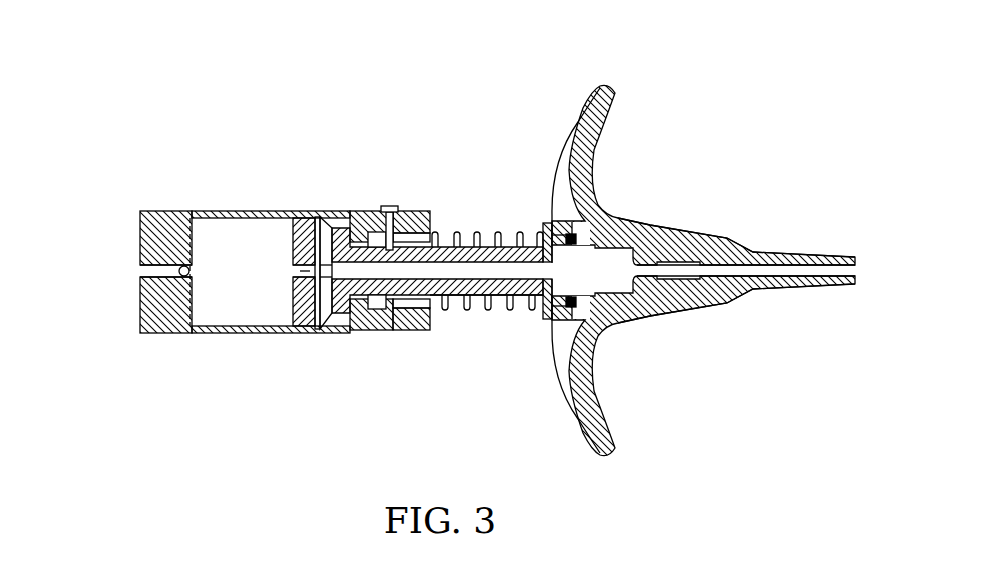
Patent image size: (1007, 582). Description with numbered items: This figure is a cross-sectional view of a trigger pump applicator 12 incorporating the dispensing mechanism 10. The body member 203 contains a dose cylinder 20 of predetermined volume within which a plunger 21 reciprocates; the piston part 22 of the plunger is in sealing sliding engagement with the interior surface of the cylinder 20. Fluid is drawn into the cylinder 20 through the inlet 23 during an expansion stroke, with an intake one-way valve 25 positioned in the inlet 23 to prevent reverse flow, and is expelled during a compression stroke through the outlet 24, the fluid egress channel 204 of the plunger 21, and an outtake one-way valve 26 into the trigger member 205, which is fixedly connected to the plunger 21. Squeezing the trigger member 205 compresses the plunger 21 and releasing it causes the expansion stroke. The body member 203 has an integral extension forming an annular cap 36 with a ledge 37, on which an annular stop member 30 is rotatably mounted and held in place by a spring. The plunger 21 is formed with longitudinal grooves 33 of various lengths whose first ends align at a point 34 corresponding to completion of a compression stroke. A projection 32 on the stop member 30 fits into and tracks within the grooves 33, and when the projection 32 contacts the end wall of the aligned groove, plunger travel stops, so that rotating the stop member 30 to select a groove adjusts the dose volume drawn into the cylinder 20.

The dispensing mechanism 10 is at (368, 145).
The trigger pump applicator 12 is at (557, 66).
The dose cylinder 20 is at (237, 334).
The plunger 21 is at (483, 274).
The piston part 22 is at (308, 329).
The inlet 23 is at (119, 267).
The outlet 24 is at (285, 263).
The intake one-way valve 25 is at (189, 272).
The outtake one-way valve 26 is at (569, 234).
The stop member 30 is at (418, 207).
The projection 32 is at (388, 206).
The longitudinal grooves 33 is at (462, 233).
The point 34 is at (399, 97).
The annular cap 36 is at (360, 211).
The ledge 37 is at (391, 331).
The body member 203 is at (153, 210).
The fluid egress channel 204 is at (475, 297).
The trigger member 205 is at (628, 217).